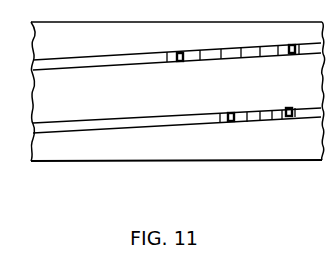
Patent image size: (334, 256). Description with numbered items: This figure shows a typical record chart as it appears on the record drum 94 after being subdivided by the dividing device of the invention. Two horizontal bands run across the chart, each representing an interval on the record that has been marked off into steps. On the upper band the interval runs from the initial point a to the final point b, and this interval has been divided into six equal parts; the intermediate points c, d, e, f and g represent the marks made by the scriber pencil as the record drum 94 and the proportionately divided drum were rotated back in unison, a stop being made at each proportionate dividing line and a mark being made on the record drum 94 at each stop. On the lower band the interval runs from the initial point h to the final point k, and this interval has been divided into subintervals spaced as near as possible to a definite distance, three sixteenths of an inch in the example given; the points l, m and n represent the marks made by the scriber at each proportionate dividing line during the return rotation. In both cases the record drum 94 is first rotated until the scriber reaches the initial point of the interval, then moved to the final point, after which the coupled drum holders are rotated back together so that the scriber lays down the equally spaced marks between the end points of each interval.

The record drum 94 is at (163, 152).
The initial point of interval a—b a is at (288, 51).
The final point of interval a— b is at (176, 53).
The subdivision mark c is at (194, 53).
The subdivision mark d is at (215, 53).
The subdivision mark e is at (236, 52).
The subdivision mark f is at (255, 52).
The subdivision mark g is at (273, 52).
The initial point of interval h—k h is at (289, 107).
The final point of interval h— k is at (225, 111).
The subdivision mark l is at (248, 121).
The subdivision mark m is at (263, 120).
The subdivision mark n is at (282, 120).